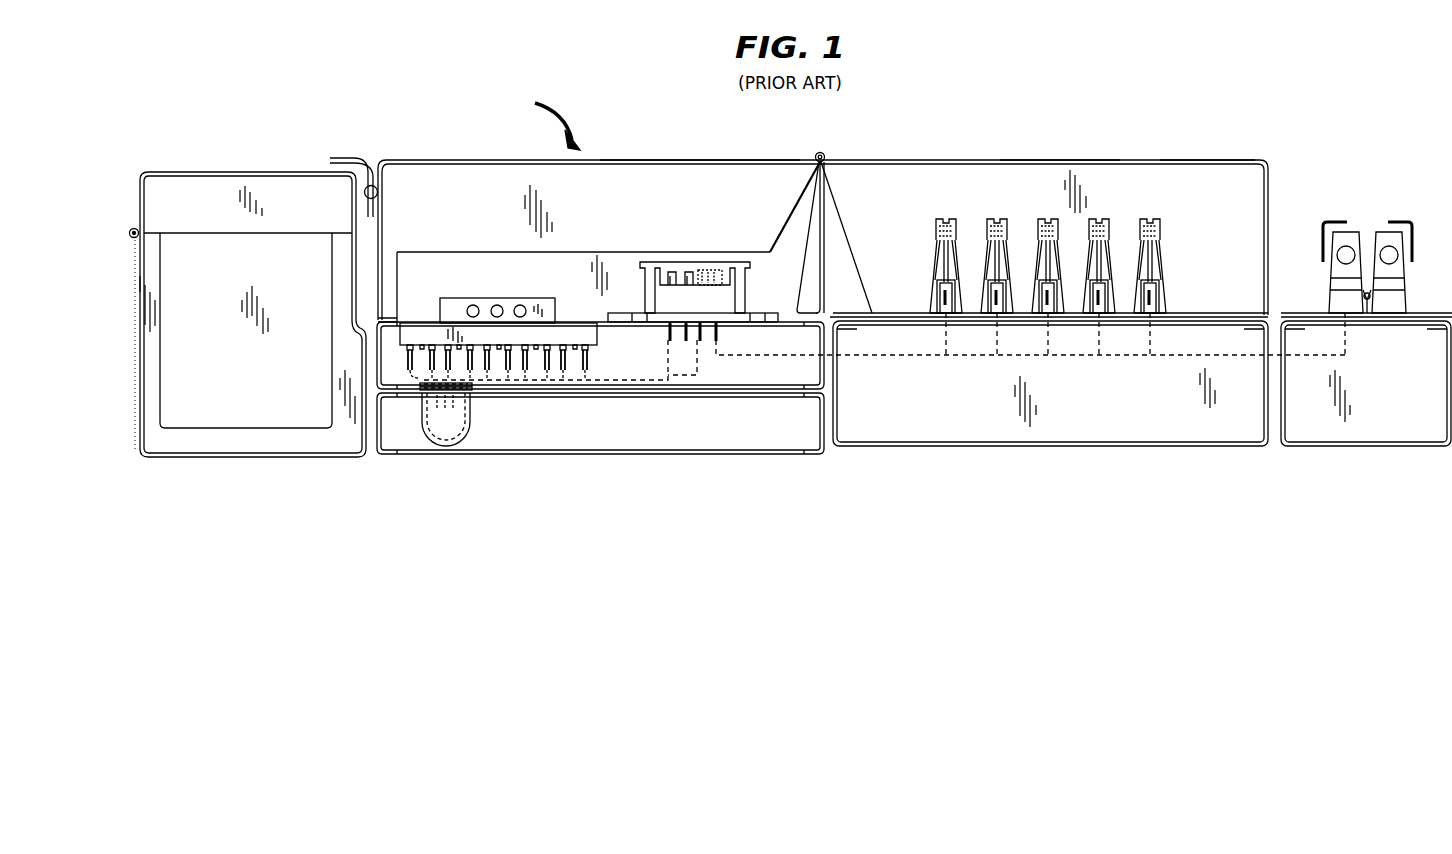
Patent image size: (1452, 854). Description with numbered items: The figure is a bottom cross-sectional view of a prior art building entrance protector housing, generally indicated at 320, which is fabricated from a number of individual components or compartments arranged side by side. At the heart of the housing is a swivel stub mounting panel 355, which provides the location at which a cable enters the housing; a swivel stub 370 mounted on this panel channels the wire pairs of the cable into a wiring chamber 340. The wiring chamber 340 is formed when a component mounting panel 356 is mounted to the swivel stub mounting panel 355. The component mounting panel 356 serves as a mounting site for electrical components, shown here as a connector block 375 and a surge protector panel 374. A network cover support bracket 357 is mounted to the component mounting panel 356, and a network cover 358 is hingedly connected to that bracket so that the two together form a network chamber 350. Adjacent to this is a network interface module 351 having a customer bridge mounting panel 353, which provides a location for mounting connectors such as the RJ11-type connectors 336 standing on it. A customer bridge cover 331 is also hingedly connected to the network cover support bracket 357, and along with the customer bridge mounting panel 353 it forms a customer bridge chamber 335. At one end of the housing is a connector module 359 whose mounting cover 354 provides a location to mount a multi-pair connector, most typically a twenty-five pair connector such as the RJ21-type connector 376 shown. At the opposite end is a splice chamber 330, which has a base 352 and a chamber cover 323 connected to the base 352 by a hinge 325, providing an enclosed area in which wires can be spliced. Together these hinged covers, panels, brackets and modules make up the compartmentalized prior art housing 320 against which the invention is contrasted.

The BEP housing 320 is at (540, 117).
The chamber cover 323 is at (205, 172).
The hinge 325 is at (133, 228).
The splice chamber 330 is at (213, 418).
The customer bridge cover 331 is at (1062, 160).
The customer bridge chamber 335 is at (1186, 177).
The RJ11-type connectors 336 is at (1040, 220).
The wiring chamber 340 is at (748, 378).
The network chamber 350 is at (453, 178).
The network interface module 351 is at (1007, 446).
The base 352 is at (250, 458).
The customer bridge mounting panel 353 is at (1205, 313).
The mounting cover 354 is at (1415, 325).
The swivel stub mounting panel 355 is at (610, 393).
The component mounting panel 356 is at (372, 400).
The network cover support bracket 357 is at (823, 168).
The network cover 358 is at (662, 160).
The connector module 359 is at (1373, 446).
The swivel stub 370 is at (462, 432).
The surge protector panel 374 is at (490, 298).
The connector block 375 is at (650, 262).
The RJ21-type connector 376 is at (1390, 222).